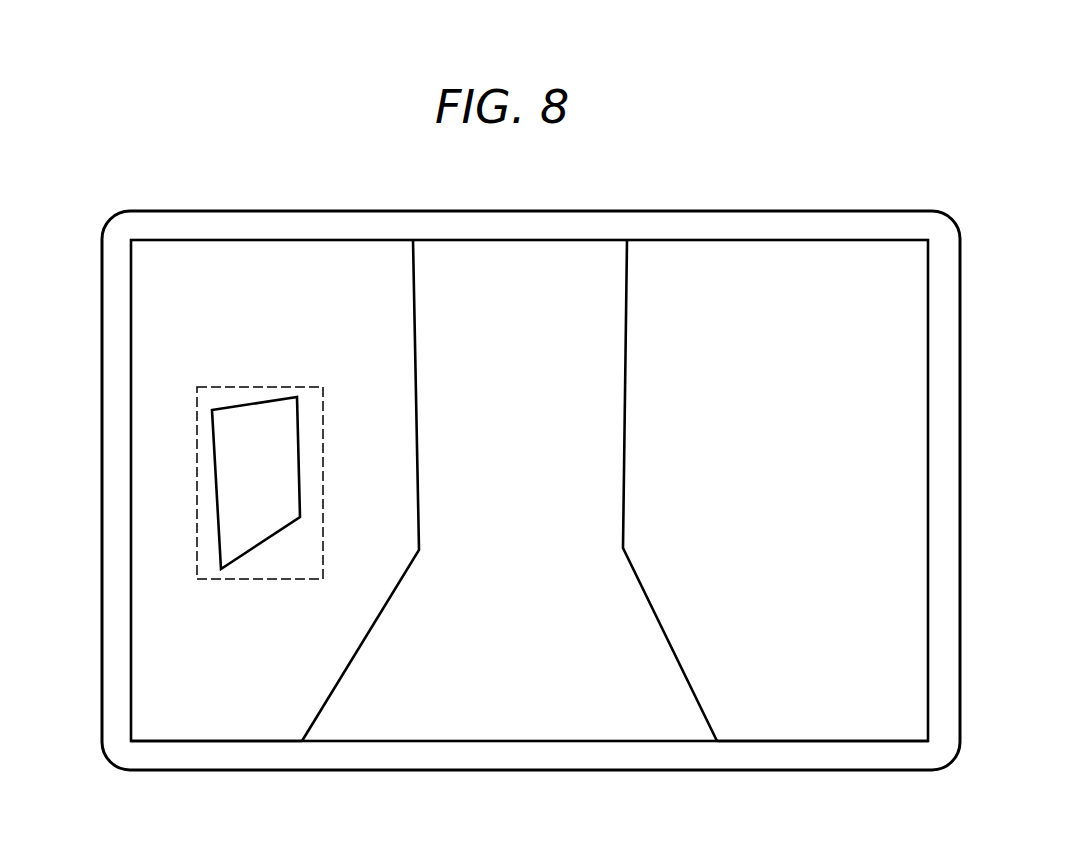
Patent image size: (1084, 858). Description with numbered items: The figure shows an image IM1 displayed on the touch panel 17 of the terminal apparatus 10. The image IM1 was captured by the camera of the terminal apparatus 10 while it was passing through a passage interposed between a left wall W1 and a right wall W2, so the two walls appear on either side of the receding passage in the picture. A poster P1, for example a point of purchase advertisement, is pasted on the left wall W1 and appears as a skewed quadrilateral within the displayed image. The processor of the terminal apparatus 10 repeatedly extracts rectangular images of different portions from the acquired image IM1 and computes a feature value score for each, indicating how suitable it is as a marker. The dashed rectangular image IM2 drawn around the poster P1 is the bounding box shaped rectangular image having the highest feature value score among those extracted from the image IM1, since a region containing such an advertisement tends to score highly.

The terminal apparatus 10 is at (931, 210).
The touch panel 17 is at (880, 240).
The image IM1 is at (837, 240).
The rectangular image IM2 is at (197, 530).
The poster P1 is at (227, 488).
The left wall W1 is at (190, 725).
The right wall W2 is at (787, 725).